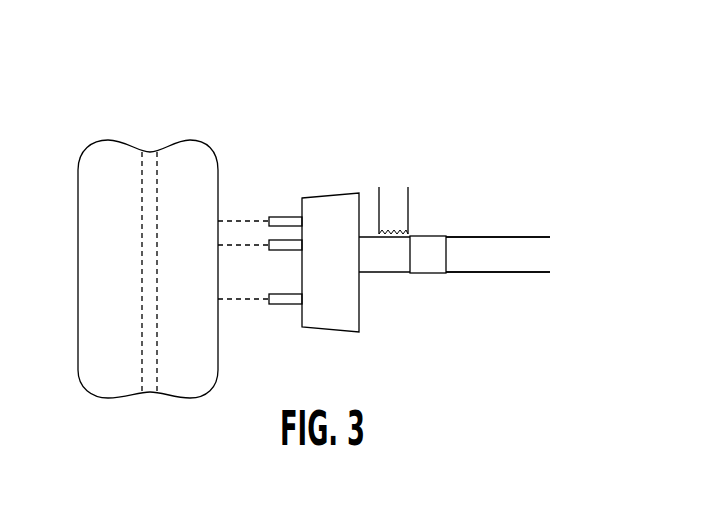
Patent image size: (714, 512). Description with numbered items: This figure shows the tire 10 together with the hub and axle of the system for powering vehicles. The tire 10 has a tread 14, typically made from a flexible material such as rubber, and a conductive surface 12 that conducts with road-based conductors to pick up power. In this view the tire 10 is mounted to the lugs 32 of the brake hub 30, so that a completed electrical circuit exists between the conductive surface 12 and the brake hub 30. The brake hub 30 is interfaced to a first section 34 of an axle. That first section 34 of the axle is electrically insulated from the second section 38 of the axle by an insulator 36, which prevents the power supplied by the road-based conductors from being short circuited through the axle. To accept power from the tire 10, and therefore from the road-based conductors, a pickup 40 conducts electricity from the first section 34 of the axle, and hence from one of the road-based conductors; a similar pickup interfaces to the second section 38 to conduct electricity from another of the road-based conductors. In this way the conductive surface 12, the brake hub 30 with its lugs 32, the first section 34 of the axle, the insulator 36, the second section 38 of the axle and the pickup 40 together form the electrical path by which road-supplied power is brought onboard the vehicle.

The tire 10 is at (240, 116).
The conductive surface 12 is at (150, 152).
The tread 14 is at (105, 125).
The brake hub 30 is at (333, 193).
The lugs 32 is at (289, 215).
The first section of the axle 34 is at (380, 272).
The insulator 36 is at (433, 236).
The second section of the axle 38 is at (512, 248).
The pickup 40 is at (395, 208).